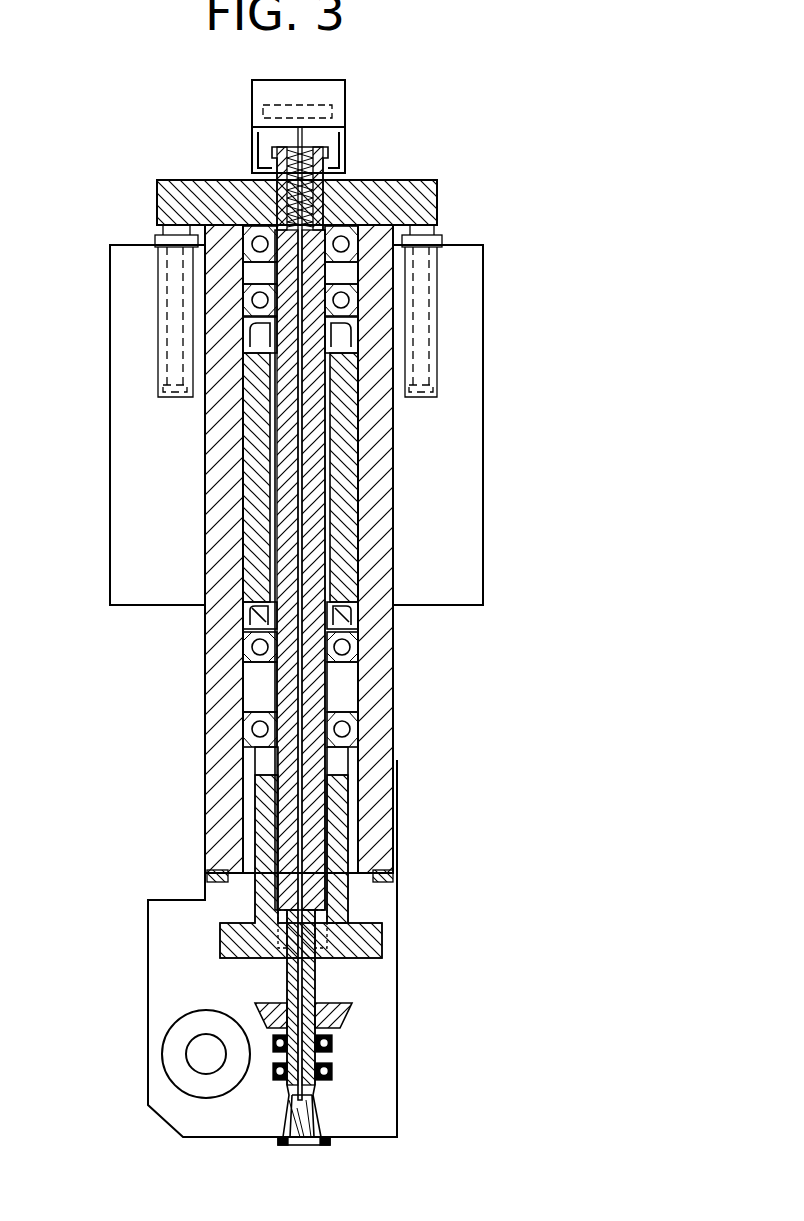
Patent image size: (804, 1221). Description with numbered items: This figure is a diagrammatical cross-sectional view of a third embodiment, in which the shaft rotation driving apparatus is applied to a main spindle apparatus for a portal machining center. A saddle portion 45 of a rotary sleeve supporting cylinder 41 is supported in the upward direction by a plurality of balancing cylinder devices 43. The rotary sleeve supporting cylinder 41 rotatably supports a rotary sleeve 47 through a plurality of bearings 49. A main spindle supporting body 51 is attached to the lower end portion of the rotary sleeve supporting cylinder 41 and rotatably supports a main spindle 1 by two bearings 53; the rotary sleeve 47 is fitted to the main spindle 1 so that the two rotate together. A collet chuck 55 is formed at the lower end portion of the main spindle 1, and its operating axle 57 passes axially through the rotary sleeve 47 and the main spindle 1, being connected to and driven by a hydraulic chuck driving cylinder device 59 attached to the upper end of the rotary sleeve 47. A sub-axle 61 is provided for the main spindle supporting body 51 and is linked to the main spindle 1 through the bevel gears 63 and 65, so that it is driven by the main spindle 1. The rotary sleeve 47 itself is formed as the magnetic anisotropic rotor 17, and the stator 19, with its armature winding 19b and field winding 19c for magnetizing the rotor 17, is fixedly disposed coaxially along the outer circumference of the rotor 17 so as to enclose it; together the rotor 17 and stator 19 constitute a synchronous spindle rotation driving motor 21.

The main spindle 1 is at (320, 1093).
The magnetic anisotropic rotor 17 is at (314, 517).
The stator 19 is at (330, 448).
The armature winding 19b is at (350, 612).
The field winding 19c is at (250, 612).
The synchronous spindle rotation driving motor 21 is at (242, 529).
The rotary sleeve supporting cylinder 41 is at (395, 738).
The balancing cylinder device 43 is at (172, 300).
The saddle portion 45 is at (127, 447).
The rotary sleeve 47 is at (285, 678).
The bearings 49 is at (345, 300).
The main spindle supporting body 51 is at (388, 1100).
The bearings 53 is at (332, 1072).
The collet chuck 55 is at (306, 1145).
The operating axle 57 is at (300, 823).
The hydraulic chuck driving cylinder device 59 is at (330, 138).
The sub-axle 61 is at (192, 1060).
The bevel gear 63 is at (340, 1010).
The bevel gear 65 is at (178, 1030).